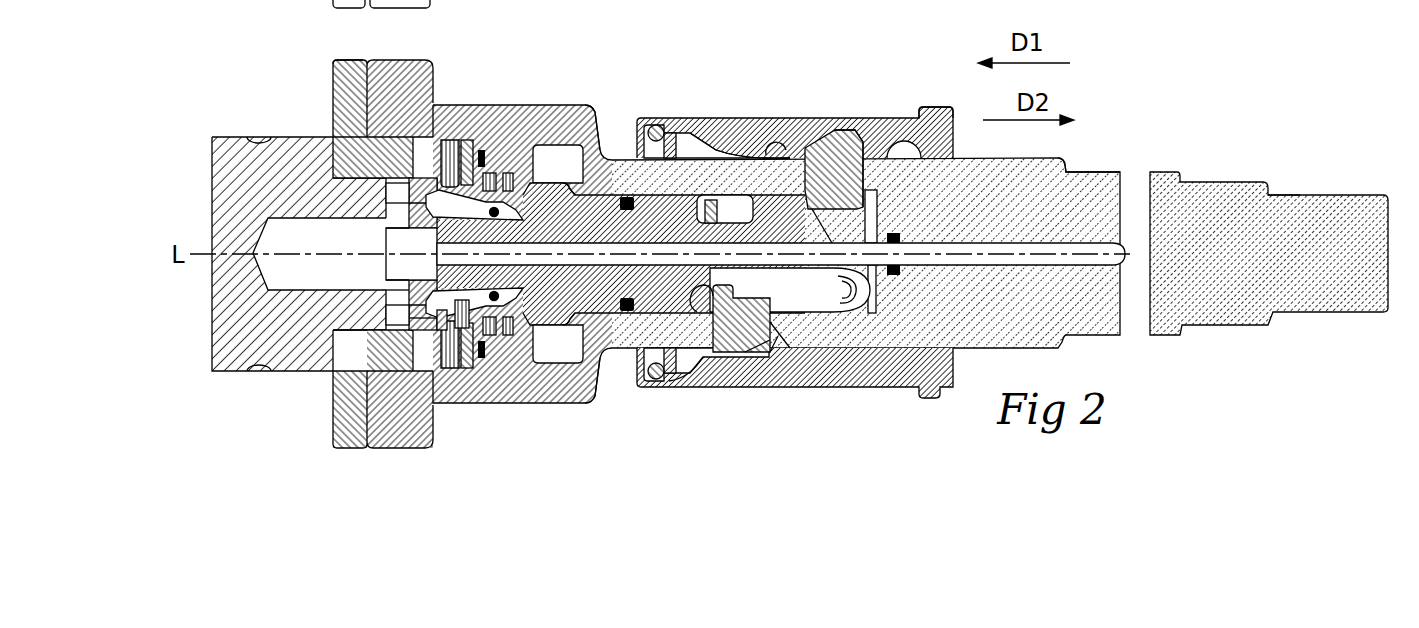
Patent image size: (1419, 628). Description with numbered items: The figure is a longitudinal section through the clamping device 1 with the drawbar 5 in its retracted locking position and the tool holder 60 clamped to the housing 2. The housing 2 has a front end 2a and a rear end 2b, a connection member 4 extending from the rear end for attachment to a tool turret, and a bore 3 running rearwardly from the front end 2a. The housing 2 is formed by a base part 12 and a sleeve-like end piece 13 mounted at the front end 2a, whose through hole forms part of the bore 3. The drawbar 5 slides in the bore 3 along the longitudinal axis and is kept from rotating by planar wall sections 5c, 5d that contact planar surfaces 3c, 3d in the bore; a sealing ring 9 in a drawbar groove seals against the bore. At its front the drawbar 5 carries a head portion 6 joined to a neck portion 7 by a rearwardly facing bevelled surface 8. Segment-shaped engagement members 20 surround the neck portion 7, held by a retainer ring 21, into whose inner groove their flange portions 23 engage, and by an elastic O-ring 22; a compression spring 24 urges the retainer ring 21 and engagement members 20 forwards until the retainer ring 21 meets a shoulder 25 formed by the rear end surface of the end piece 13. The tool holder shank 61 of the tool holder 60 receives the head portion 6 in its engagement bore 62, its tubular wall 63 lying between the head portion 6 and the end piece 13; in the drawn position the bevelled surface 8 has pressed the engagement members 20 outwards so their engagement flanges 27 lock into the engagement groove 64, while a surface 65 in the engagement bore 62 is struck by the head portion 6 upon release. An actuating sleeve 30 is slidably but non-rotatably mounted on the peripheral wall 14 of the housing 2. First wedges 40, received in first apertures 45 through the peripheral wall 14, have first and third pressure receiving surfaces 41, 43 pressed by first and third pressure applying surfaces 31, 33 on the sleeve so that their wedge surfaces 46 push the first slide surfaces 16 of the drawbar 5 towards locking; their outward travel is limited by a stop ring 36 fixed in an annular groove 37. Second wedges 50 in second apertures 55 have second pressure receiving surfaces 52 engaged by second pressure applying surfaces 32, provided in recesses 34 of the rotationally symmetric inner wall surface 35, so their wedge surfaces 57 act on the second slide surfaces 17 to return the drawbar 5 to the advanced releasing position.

The clamping device 1 is at (1110, 90).
The housing 2 is at (603, 90).
The front end 2a is at (343, 55).
The rear end 2b is at (1265, 168).
The bore 3 is at (503, 347).
The planar surface 3c is at (555, 322).
The planar surface 3d is at (562, 186).
The connection member 4 is at (1317, 307).
The drawbar 5 is at (650, 200).
The planar wall section 5c is at (563, 327).
The planar wall section 5d is at (550, 177).
The head portion 6 is at (417, 297).
The neck portion 7 is at (458, 270).
The bevelled surface 8 is at (435, 293).
The sealing ring 9 is at (623, 313).
The base part 12 is at (497, 110).
The end piece 13 is at (345, 123).
The peripheral wall 14 is at (685, 163).
The first slide surface 16 is at (702, 297).
The second slide surface 17 is at (825, 222).
The engagement members 20 is at (462, 310).
The retainer ring 21 is at (482, 327).
The O-ring 22 is at (503, 293).
The flange portion 23 is at (490, 296).
The compression spring 24 is at (507, 335).
The shoulder 25 is at (470, 140).
The engagement flange 27 is at (432, 325).
The actuating sleeve 30 is at (713, 123).
The first pressure applying surfaces 31 is at (747, 350).
The second pressure applying surfaces 32 is at (763, 147).
The third pressure applying surface 33 is at (700, 360).
The recess 34 is at (877, 133).
The inner wall surface 35 is at (907, 347).
The stop ring 36 is at (655, 380).
The annular groove 37 is at (652, 380).
The first wedges 40 is at (727, 352).
The first pressure receiving surfaces 41 is at (768, 345).
The third pressure receiving surface 43 is at (770, 352).
The first aperture 45 is at (773, 333).
The wedge surface 46 is at (738, 260).
The second wedges 50 is at (847, 140).
The second pressure receiving surface 52 is at (827, 137).
The second aperture 55 is at (865, 168).
The wedge surface 57 is at (823, 204).
The tool holder 60 is at (235, 378).
The tool holder shank 61 is at (367, 317).
The engagement bore 62 is at (388, 215).
The tubular wall 63 is at (420, 323).
The engagement groove 64 is at (438, 195).
The surface 65 is at (386, 300).